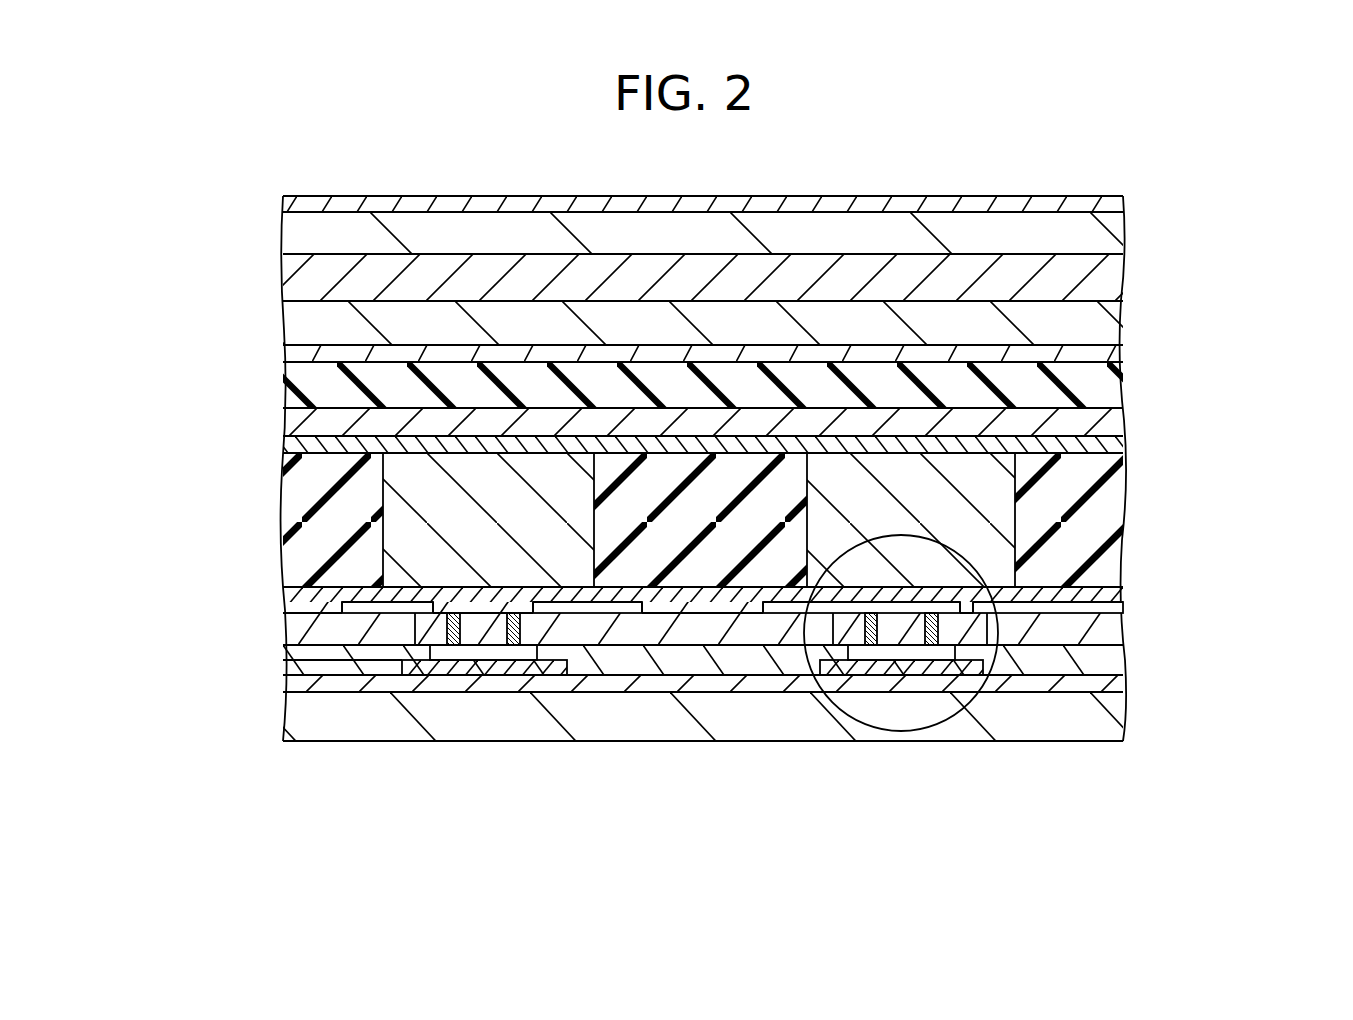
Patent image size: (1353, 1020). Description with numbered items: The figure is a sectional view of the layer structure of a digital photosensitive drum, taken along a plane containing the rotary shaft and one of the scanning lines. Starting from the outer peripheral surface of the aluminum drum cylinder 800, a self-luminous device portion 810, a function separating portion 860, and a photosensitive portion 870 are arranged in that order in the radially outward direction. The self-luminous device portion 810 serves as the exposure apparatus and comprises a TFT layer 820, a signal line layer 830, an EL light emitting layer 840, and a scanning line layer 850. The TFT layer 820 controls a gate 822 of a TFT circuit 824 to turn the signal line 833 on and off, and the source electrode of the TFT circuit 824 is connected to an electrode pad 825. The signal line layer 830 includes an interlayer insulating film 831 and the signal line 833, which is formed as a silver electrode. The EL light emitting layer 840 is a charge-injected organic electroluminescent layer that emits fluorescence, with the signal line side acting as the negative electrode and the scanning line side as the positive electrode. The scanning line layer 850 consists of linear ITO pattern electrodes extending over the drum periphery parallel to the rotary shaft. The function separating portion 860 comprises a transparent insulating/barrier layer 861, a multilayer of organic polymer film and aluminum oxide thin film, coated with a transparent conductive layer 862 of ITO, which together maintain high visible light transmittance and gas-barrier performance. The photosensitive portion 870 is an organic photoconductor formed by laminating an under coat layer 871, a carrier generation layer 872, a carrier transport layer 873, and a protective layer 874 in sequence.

The drum cylinder 800 is at (308, 721).
The self-luminous device portion 810 is at (745, 639).
The TFT layer 820 is at (674, 688).
The gate 822 is at (398, 668).
The TFT circuit 824 is at (952, 718).
The electrode pad 825 is at (345, 594).
The signal line layer 830 is at (674, 633).
The interlayer insulating film 831 is at (702, 568).
The signal line 833 is at (430, 513).
The EL light emitting layer 840 is at (1125, 445).
The scanning line layer 850 is at (1123, 423).
The function separating portion 860 is at (596, 362).
The transparent insulating/barrier layer 861 is at (282, 398).
The transparent conductive layer 862 is at (287, 353).
The photosensitive portion 870 is at (814, 246).
The under coat layer 871 is at (773, 323).
The carrier generation layer 872 is at (1110, 277).
The carrier transport layer 873 is at (1117, 232).
The protective layer 874 is at (1125, 203).